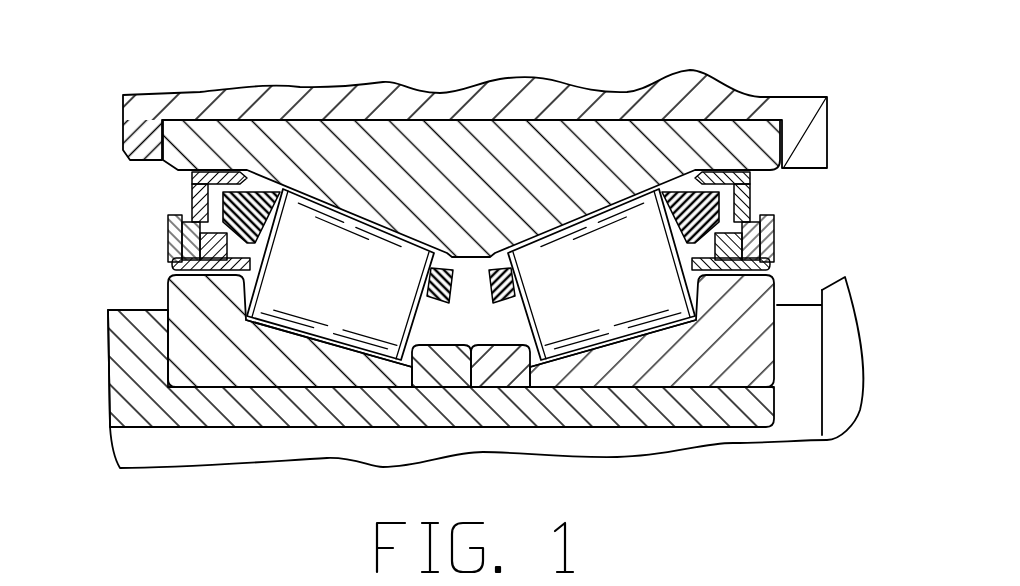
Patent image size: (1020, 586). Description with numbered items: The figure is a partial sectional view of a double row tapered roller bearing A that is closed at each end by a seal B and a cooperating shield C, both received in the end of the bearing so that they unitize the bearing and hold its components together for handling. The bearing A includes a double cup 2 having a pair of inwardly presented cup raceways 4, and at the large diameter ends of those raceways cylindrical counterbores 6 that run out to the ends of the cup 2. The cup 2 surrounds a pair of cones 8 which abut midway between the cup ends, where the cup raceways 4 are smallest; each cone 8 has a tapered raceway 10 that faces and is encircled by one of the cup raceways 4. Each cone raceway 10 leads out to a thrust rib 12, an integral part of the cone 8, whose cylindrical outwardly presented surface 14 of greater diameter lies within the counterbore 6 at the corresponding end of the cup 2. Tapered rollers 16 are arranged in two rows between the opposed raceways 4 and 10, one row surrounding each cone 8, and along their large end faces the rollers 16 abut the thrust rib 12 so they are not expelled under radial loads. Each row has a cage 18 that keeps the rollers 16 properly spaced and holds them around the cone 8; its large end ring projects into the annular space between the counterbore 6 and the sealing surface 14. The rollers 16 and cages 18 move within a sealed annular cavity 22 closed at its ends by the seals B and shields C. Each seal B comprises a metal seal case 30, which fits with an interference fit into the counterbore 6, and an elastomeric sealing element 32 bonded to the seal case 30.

The double row tapered roller bearing A is at (588, 118).
The seal B is at (472, 164).
The shield C is at (472, 267).
The double cup 2 is at (417, 160).
The cup raceways 4 is at (471, 274).
The cylindrical counterbores 6 is at (192, 170).
The cones 8 is at (255, 382).
The tapered raceway 10 is at (323, 342).
The thrust rib 12 is at (190, 322).
The cylindrical outwardly presented surface 14 is at (173, 262).
The tapered rollers 16 is at (354, 286).
The cage 18 is at (268, 213).
The annular cavity 22 is at (486, 331).
The seal case 30 is at (215, 175).
The elastomeric sealing element 32 is at (190, 237).